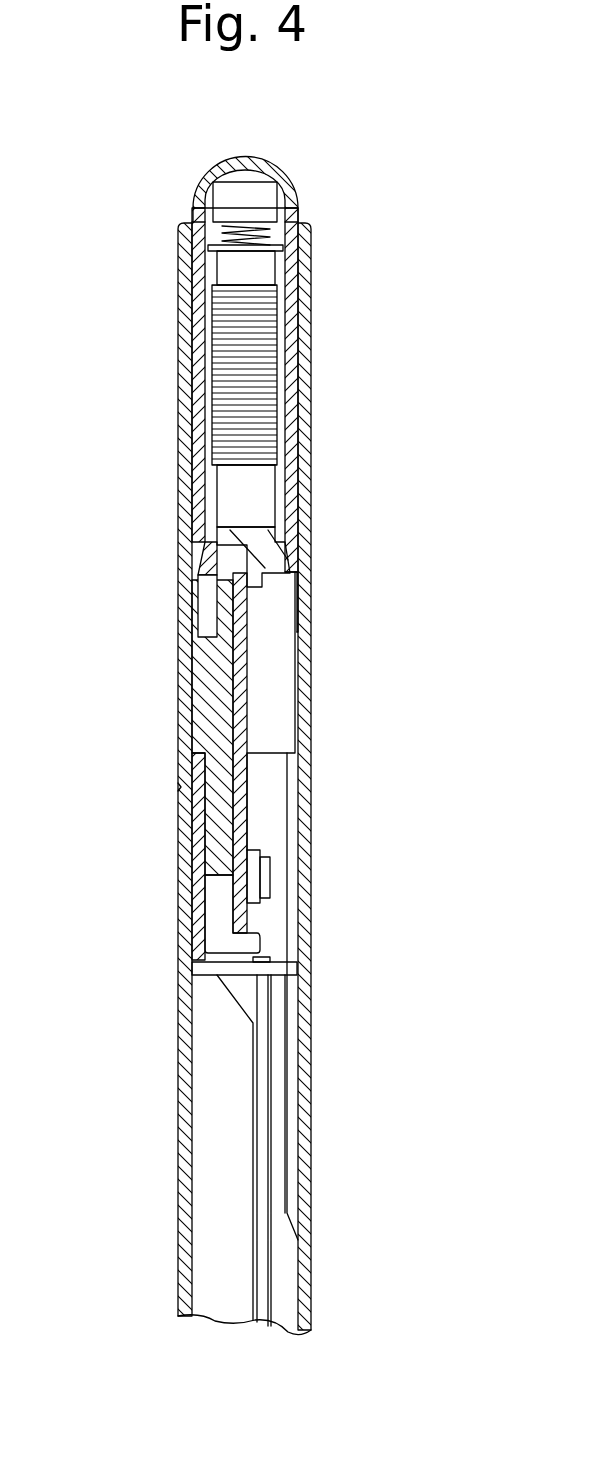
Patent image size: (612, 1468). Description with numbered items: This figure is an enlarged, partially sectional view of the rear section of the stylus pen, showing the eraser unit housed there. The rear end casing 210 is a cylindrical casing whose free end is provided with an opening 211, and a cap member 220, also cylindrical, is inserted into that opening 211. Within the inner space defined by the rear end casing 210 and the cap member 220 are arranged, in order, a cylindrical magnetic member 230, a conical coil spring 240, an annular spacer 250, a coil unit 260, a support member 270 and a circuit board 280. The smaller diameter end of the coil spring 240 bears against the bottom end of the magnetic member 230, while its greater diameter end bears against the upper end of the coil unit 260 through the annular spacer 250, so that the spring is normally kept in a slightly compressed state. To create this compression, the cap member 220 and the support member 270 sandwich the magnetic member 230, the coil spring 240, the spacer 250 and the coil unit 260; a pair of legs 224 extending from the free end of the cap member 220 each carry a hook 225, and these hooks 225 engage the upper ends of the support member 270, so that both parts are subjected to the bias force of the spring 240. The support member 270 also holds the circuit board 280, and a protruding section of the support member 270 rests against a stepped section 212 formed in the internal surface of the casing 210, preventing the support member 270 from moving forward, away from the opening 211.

The rear end casing 210 is at (308, 447).
The opening 211 is at (195, 213).
The stepped section 212 is at (187, 787).
The cap member 220 is at (312, 202).
The legs 224 is at (298, 393).
The hook 225 is at (297, 570).
The magnetic member 230 is at (262, 190).
The conical coil spring 240 is at (284, 249).
The annular spacer 250 is at (272, 262).
The coil unit 260 is at (272, 291).
The support member 270 is at (248, 566).
The circuit board 280 is at (243, 710).